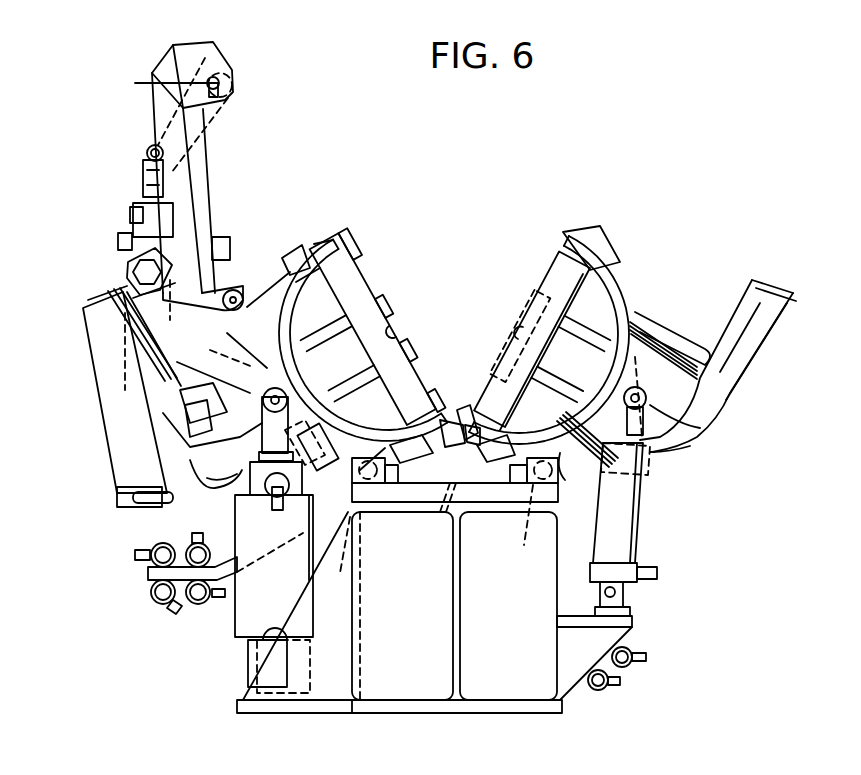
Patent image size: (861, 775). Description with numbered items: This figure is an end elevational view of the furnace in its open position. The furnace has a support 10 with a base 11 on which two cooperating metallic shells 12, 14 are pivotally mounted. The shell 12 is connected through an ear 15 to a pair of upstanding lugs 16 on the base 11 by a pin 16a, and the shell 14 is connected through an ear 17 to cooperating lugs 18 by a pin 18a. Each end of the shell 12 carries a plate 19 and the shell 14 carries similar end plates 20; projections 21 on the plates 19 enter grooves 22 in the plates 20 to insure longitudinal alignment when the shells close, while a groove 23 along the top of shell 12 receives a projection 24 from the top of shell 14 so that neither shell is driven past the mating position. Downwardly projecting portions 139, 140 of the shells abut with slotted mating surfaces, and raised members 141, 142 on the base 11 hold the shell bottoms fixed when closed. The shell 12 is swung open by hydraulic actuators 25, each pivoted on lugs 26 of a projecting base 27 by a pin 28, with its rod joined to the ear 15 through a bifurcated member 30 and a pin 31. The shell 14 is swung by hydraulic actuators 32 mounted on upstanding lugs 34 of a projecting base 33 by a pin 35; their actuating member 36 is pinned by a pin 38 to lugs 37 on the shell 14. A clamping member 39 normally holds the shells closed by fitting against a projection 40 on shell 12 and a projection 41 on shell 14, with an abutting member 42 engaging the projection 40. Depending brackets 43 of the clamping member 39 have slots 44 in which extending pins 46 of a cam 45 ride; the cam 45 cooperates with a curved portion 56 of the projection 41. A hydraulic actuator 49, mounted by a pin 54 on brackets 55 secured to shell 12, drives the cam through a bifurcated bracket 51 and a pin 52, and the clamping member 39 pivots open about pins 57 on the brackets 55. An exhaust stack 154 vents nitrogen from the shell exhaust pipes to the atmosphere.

The support 10 is at (465, 665).
The base 11 is at (575, 533).
The metallic shell 12 is at (298, 255).
The metallic shell 14 is at (633, 300).
The ear 15 is at (410, 465).
The upstanding lugs 16 is at (345, 432).
The pin 16a is at (358, 580).
The ear 17 is at (565, 480).
The lugs 18 is at (510, 472).
The pin 18a is at (528, 531).
The plate 19 is at (344, 381).
The end plates 20 is at (562, 379).
The projections 21 is at (388, 300).
The grooves 22 is at (530, 300).
The groove 23 is at (350, 240).
The projection 24 is at (567, 240).
The hydraulic actuators 25 is at (282, 598).
The upstanding lugs 26 is at (248, 670).
The projecting base 27 is at (300, 713).
The pin 28 is at (243, 692).
The bifurcated member 30 is at (213, 475).
The pin 31 is at (230, 337).
The hydraulic actuators 32 is at (603, 556).
The projecting base 33 is at (562, 655).
The upstanding lugs 34 is at (630, 612).
The pin 35 is at (657, 575).
The actuating member 36 is at (688, 450).
The lugs 37 is at (645, 327).
The pin 38 is at (722, 417).
The clamping member 39 is at (208, 167).
The projection 40 is at (322, 238).
The projection 41 is at (598, 228).
The abutting member 42 is at (225, 237).
The depending brackets 43 is at (205, 42).
The slots 44 is at (228, 95).
The cam 45 is at (232, 78).
The extending pins 46 is at (155, 87).
The hydraulic actuator 49 is at (117, 460).
The bifurcated bracket 51 is at (143, 185).
The pin 52 is at (147, 152).
The pin 54 is at (130, 262).
The brackets 55 is at (120, 294).
The curved portion 56 is at (628, 290).
The pins 57 is at (238, 290).
The downwardly projecting portion 139 is at (452, 420).
The downwardly projecting portion 140 is at (467, 425).
The raised member 141 is at (393, 483).
The raised member 142 is at (512, 472).
The exhaust stack 154 is at (107, 353).